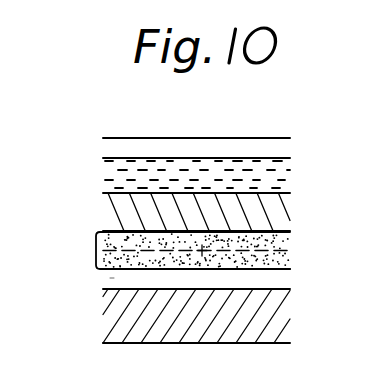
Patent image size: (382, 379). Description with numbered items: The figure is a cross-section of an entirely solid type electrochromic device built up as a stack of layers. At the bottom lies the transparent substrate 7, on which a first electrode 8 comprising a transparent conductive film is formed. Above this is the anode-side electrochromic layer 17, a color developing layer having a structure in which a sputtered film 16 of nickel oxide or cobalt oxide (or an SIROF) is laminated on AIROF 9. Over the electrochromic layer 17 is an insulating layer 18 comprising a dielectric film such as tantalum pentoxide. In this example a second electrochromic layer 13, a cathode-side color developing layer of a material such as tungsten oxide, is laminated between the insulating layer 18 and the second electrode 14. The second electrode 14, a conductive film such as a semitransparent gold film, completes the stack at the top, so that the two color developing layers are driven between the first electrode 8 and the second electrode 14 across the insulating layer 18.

The transparent substrate 7 is at (118, 320).
The first electrode 8 is at (115, 278).
The AIROF 9 is at (288, 257).
The second electrochromic layer 13 is at (110, 176).
The second electrode 14 is at (108, 148).
The sputtered film 16 is at (288, 238).
The electrochromic layer 17 is at (96, 250).
The insulating layer 18 is at (118, 215).